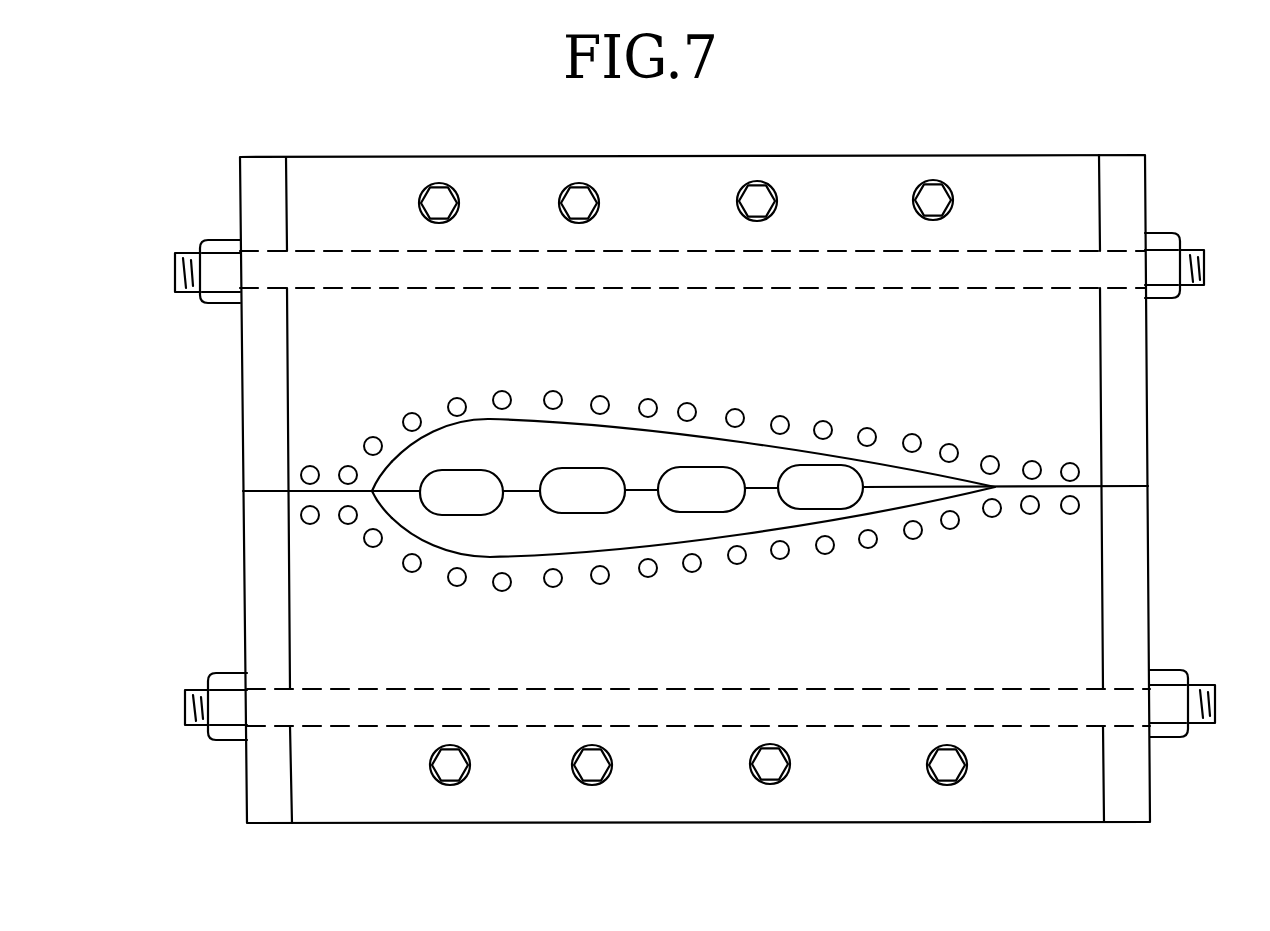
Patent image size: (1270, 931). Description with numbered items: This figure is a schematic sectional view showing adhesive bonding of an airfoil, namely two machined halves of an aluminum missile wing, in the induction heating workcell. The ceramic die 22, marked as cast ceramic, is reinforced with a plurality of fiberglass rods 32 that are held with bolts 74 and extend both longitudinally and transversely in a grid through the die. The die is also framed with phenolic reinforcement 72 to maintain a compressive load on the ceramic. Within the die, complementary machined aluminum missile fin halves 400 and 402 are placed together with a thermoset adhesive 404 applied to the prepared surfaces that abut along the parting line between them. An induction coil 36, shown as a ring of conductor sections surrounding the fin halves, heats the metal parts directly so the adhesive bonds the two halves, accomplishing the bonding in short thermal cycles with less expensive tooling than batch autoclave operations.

The die 22 is at (1035, 621).
The fiberglass rods 32 is at (940, 180).
The induction coil 36 is at (453, 403).
The phenolic reinforcement 72 is at (270, 157).
The bolts 74 is at (1173, 300).
The machined aluminum missile fin half 400 is at (918, 472).
The machined aluminum missile fin half 402 is at (372, 500).
The thermoset adhesive 404 is at (1150, 487).